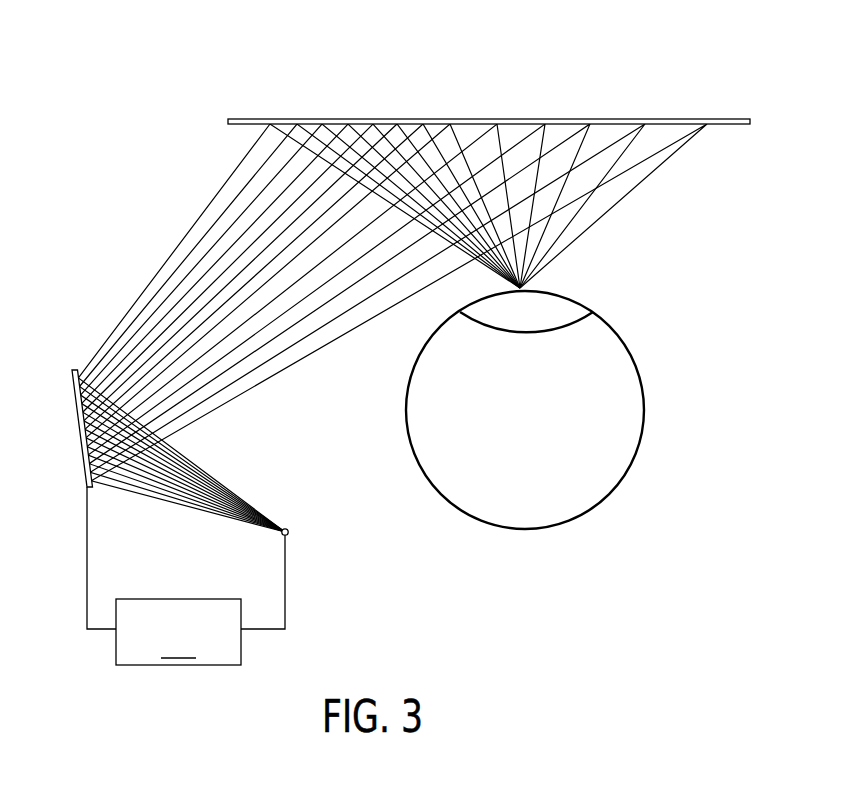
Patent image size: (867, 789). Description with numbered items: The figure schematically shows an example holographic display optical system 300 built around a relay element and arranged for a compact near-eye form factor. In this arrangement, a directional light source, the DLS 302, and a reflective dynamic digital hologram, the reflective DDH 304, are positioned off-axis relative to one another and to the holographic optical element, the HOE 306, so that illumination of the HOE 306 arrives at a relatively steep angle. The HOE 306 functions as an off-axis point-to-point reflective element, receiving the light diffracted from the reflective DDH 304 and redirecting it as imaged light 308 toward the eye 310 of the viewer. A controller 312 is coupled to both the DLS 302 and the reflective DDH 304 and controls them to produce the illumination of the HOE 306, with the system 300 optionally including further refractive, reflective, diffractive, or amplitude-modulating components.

The optical system 300 is at (667, 38).
The DLS 302 is at (289, 533).
The reflective DDH 304 is at (79, 433).
The HOE 306 is at (442, 118).
The imaged light 308 is at (170, 229).
The eye 310 is at (545, 439).
The controller 312 is at (196, 658).